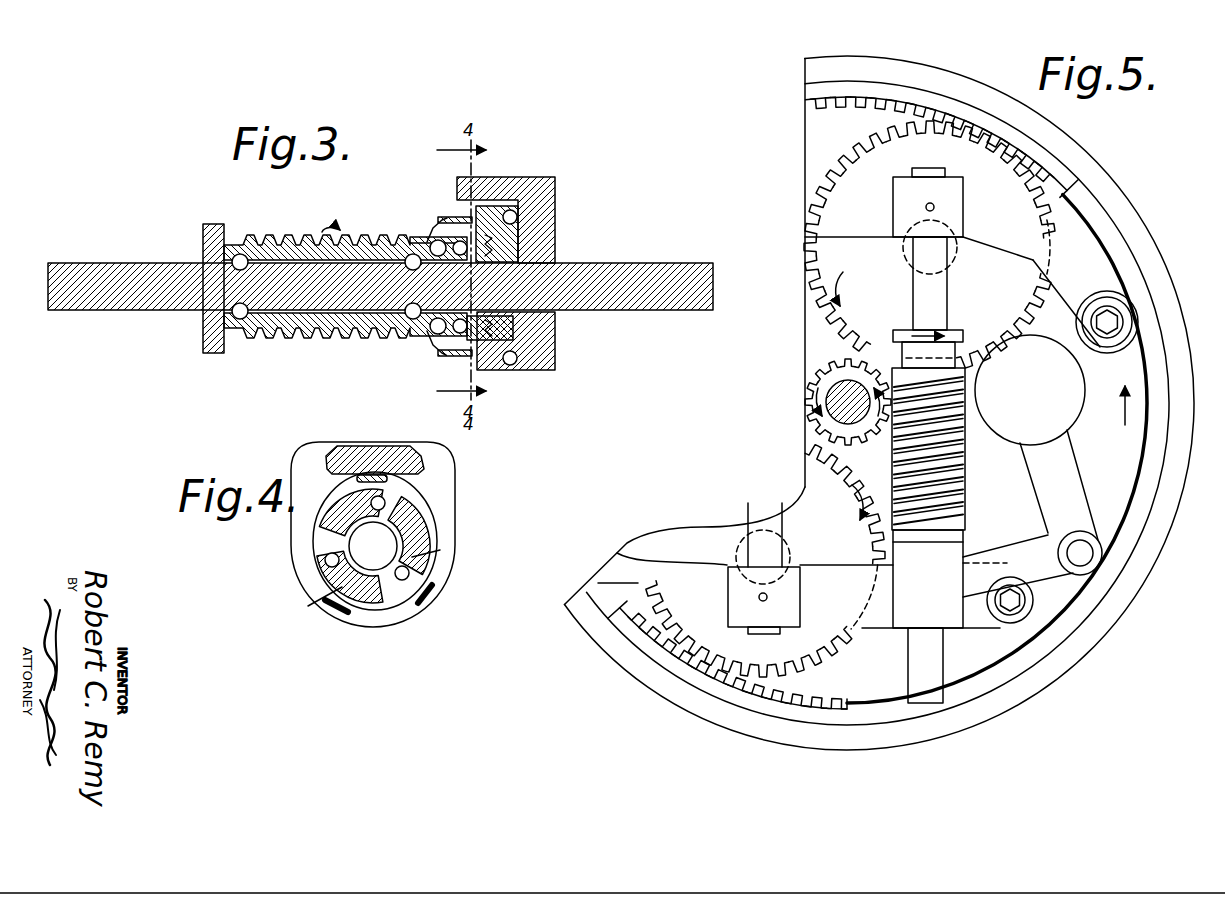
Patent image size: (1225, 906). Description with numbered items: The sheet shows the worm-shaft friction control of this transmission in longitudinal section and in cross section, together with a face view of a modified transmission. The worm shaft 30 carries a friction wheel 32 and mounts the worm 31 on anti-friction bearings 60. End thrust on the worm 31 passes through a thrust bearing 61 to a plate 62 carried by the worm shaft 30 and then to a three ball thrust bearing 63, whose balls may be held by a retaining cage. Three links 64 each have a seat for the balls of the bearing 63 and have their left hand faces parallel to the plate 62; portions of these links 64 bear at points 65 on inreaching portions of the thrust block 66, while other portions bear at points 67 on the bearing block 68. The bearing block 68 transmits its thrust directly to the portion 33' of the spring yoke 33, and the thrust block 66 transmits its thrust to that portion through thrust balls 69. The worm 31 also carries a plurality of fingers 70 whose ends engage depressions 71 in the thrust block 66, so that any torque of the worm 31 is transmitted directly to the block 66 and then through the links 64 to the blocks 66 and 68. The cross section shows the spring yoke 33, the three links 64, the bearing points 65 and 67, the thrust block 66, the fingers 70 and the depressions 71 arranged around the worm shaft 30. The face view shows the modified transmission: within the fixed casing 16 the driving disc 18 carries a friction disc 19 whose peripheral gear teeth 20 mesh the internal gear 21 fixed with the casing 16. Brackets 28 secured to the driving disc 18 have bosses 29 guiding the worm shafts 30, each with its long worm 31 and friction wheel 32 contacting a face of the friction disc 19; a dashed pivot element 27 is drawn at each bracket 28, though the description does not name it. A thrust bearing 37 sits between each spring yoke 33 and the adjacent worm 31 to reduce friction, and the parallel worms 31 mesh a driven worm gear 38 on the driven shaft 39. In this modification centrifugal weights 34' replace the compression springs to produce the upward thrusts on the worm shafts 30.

In FIG. 5, the fixed casing 16 is at (1120, 192).
In FIG. 5, the driving disc 18 is at (1130, 522).
In FIG. 5, the friction disc 19 is at (799, 432).
In FIG. 5, the peripheral gear teeth 20 is at (815, 298).
In FIG. 5, the internal gear 21 is at (1040, 180).
In FIG. 5, the pivot 27 is at (952, 250).
In FIG. 5, the bracket 28 is at (845, 402).
In FIG. 5, the boss 29 is at (963, 207).
In FIG. 3, the worm shaft 30 is at (148, 255).
In FIG. 5, the worm shaft 30 is at (948, 292).
In FIG. 3, the worm 31 is at (340, 340).
In FIG. 5, the worm 31 is at (950, 458).
In FIG. 3, the friction wheel 32 is at (205, 345).
In FIG. 5, the friction wheel 32 is at (903, 332).
In FIG. 3, the spring yoke 33 is at (506, 205).
In FIG. 4, the spring yoke 33 is at (362, 448).
In FIG. 3, the portion of the spring yoke 33' is at (534, 350).
In FIG. 5, the centrifugal weight 34' is at (1050, 455).
In FIG. 5, the thrust bearing 37 is at (960, 540).
In FIG. 5, the driven worm gear 38 is at (822, 380).
In FIG. 5, the driven shaft 39 is at (830, 418).
In FIG. 3, the anti-friction bearing 60 is at (242, 256).
In FIG. 3, the thrust bearing 61 is at (412, 340).
In FIG. 3, the plate 62 is at (440, 358).
In FIG. 3, the three ball thrust bearing 63 is at (442, 236).
In FIG. 4, the three ball thrust bearing 63 is at (383, 500).
In FIG. 3, the link 64 is at (460, 225).
In FIG. 4, the link 64 is at (381, 548).
In FIG. 4, the point of bearing 65 is at (403, 513).
In FIG. 3, the thrust block 66 is at (508, 366).
In FIG. 4, the thrust block 66 is at (300, 548).
In FIG. 4, the bearing point 67 is at (323, 567).
In FIG. 3, the bearing block 68 is at (510, 330).
In FIG. 3, the thrust ball 69 is at (518, 217).
In FIG. 3, the finger 70 is at (455, 358).
In FIG. 4, the finger 70 is at (428, 602).
In FIG. 4, the depression 71 is at (333, 612).